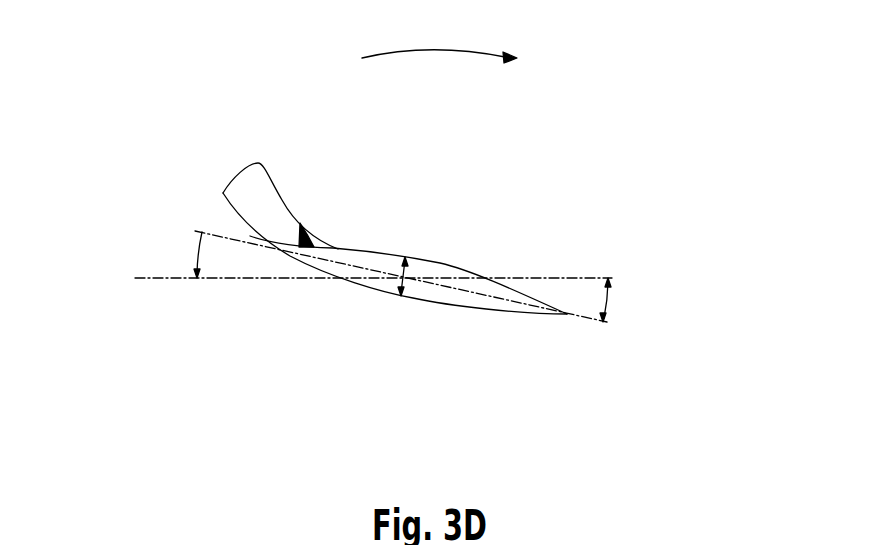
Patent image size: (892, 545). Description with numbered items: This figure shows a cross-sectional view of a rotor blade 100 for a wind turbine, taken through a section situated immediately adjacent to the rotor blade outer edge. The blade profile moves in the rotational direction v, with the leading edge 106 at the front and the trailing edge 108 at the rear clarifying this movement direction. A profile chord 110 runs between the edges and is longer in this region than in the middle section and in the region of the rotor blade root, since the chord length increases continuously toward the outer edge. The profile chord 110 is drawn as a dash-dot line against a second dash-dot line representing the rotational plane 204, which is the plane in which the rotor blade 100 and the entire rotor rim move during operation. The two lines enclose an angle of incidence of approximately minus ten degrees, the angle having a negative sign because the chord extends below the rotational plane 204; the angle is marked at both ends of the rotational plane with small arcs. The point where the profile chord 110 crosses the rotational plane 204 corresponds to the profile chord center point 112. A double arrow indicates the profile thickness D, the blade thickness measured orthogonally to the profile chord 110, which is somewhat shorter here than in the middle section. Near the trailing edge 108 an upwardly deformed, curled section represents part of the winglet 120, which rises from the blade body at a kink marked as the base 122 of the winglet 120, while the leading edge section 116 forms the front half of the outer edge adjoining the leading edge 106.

The rotor blade 100 is at (530, 167).
The leading edge 106 is at (567, 315).
The trailing edge 108 is at (224, 193).
The profile chord 110 is at (452, 293).
The profile chord center point 112 is at (407, 280).
The leading edge section 116 is at (530, 295).
The winglet 120 is at (260, 210).
The base of the winglet 122 is at (305, 224).
The rotational plane 204 is at (138, 279).
The profile thickness D is at (393, 292).
The rotational direction V is at (428, 50).